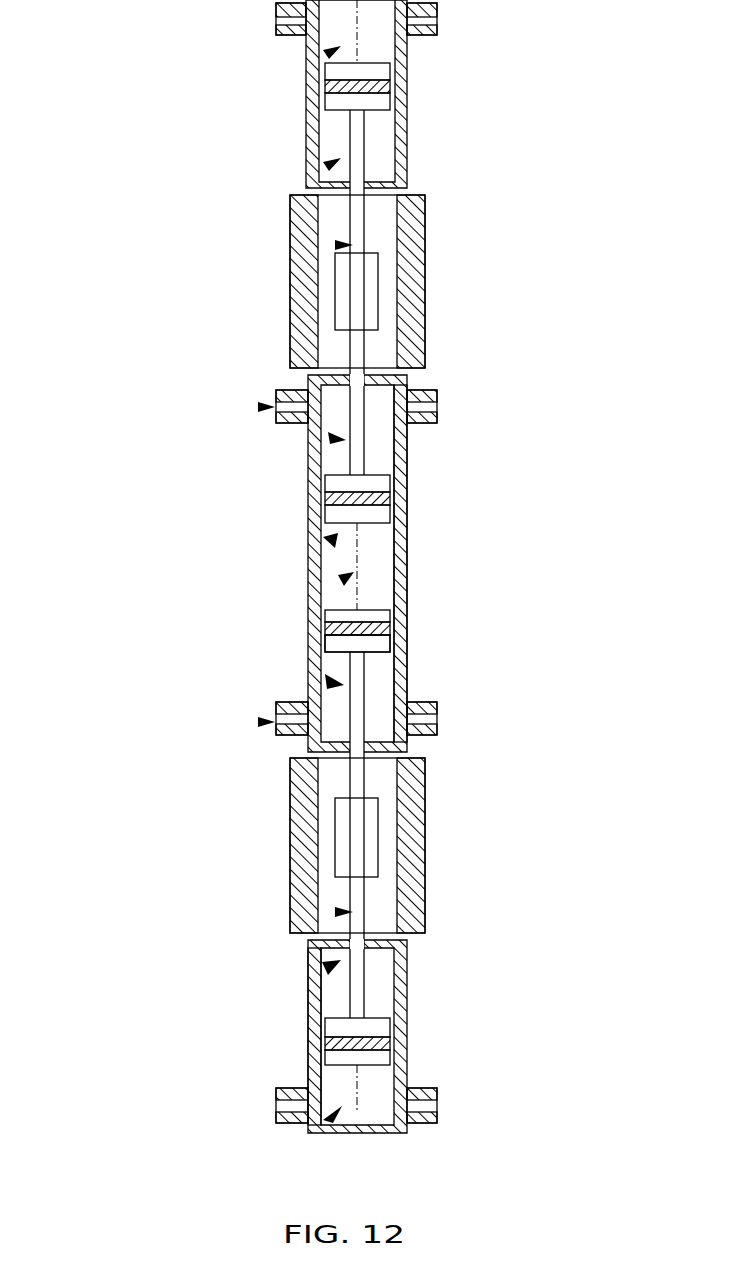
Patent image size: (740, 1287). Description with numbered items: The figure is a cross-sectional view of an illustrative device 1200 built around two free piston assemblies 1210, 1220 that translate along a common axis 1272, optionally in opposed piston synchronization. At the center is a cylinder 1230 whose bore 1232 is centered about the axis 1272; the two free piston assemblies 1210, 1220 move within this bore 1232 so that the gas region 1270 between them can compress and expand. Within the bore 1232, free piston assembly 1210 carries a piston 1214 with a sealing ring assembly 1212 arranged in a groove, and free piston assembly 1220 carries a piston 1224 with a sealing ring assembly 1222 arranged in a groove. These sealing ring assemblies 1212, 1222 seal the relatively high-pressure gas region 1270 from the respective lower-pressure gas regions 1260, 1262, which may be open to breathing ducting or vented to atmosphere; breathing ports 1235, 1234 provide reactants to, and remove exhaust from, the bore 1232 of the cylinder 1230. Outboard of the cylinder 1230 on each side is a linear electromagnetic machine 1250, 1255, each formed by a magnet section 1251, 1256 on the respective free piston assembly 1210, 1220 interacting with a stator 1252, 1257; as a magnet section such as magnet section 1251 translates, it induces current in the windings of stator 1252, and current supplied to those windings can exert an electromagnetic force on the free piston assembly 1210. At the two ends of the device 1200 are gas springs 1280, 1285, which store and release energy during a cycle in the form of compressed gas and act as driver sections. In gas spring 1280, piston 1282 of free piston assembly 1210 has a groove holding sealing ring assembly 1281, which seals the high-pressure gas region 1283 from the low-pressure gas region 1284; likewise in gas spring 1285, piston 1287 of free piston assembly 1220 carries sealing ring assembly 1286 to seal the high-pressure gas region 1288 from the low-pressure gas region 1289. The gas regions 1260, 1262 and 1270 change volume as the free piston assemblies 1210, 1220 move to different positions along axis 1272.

The device 1200 is at (90, 192).
The gas spring 1280 is at (527, 177).
The gas region 1283 is at (306, 56).
The gas region 1284 is at (308, 165).
The sealing ring assembly 1281 is at (392, 88).
The piston 1282 is at (392, 110).
The linear electromagnetic machine 1250 is at (527, 197).
The magnet section 1251 is at (335, 295).
The stator 1252 is at (290, 345).
The free piston assembly 1210 is at (340, 243).
The cylinder 1230 is at (407, 588).
The breathing port 1235 is at (258, 405).
The breathing port 1234 is at (258, 722).
The gas region 1260 is at (308, 436).
The sealing ring assembly 1212 is at (405, 490).
The bore 1232 is at (407, 530).
The piston 1214 is at (320, 537).
The gas region 1270 is at (340, 578).
The sealing ring assembly 1222 is at (407, 626).
The piston 1224 is at (325, 630).
The gas region 1262 is at (325, 680).
The linear electromagnetic machine 1255 is at (525, 760).
The magnet section 1256 is at (335, 835).
The stator 1257 is at (290, 866).
The free piston assembly 1220 is at (340, 910).
The gas spring 1285 is at (535, 1137).
The gas region 1289 is at (320, 968).
The piston 1287 is at (308, 1025).
The sealing ring assembly 1286 is at (407, 1040).
The axis 1272 is at (362, 1082).
The gas region 1288 is at (322, 1115).